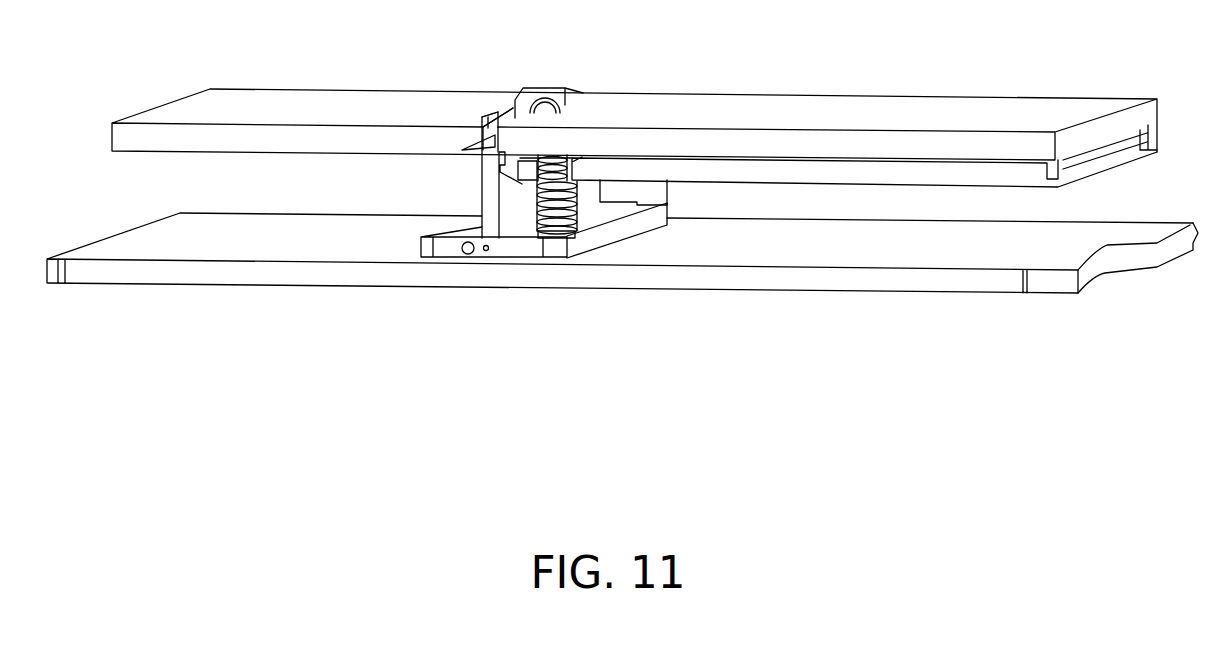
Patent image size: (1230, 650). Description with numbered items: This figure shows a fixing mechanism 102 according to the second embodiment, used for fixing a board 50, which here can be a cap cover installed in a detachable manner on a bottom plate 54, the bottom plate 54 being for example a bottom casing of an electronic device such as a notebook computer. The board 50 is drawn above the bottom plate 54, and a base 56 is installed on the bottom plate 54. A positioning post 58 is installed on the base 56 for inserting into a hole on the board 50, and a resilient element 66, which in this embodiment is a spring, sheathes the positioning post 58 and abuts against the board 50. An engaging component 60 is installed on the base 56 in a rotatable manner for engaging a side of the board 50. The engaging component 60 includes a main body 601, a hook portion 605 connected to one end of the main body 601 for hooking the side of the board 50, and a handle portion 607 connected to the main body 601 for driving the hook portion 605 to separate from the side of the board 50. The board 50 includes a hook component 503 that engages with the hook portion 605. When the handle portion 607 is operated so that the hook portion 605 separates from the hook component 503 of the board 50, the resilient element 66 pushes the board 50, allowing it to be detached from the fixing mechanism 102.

The board 50 is at (600, 142).
The hook component 503 is at (508, 182).
The bottom plate 54 is at (798, 287).
The base 56 is at (540, 256).
The positioning post 58 is at (580, 217).
The resilient element 66 is at (566, 240).
The engaging component 60 is at (388, 272).
The main body 601 is at (514, 208).
The hook portion 605 is at (485, 143).
The handle portion 607 is at (483, 97).
The fixing mechanism 102 is at (552, 304).